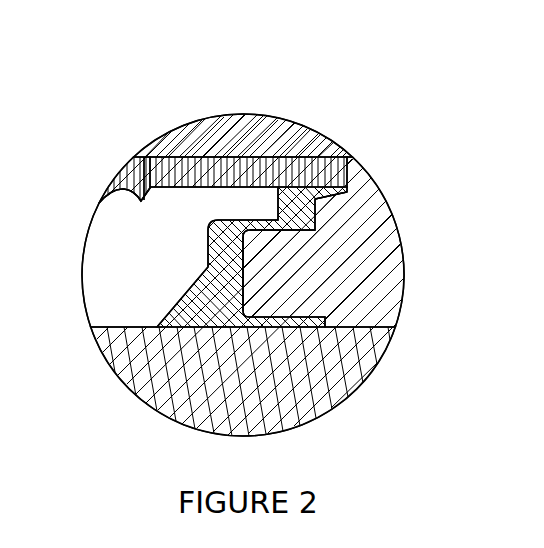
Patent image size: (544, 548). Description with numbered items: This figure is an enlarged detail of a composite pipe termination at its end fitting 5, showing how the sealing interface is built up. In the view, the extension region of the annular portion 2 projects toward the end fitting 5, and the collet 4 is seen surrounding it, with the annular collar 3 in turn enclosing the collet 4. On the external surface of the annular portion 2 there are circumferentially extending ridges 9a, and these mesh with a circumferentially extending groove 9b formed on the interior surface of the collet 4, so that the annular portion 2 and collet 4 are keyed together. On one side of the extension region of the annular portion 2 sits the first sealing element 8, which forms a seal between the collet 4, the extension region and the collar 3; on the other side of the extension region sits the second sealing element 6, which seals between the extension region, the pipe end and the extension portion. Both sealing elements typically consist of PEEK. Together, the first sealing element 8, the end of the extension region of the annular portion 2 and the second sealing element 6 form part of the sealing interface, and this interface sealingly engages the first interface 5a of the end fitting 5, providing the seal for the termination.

The annular portion 2 is at (212, 145).
The annular collar 3 is at (315, 375).
The collet 4 is at (218, 207).
The end fitting 5 is at (362, 188).
The first interface 5a is at (246, 296).
The second sealing element 6 is at (175, 147).
The first sealing element 8 is at (298, 198).
The circumferentially extending ridges 9a is at (155, 190).
The circumferentially extending groove 9b is at (133, 197).